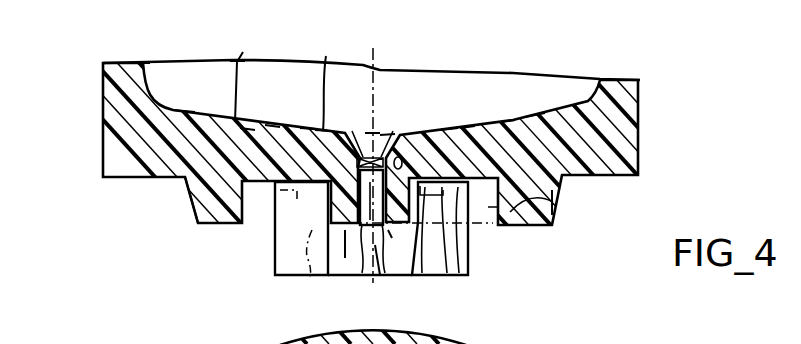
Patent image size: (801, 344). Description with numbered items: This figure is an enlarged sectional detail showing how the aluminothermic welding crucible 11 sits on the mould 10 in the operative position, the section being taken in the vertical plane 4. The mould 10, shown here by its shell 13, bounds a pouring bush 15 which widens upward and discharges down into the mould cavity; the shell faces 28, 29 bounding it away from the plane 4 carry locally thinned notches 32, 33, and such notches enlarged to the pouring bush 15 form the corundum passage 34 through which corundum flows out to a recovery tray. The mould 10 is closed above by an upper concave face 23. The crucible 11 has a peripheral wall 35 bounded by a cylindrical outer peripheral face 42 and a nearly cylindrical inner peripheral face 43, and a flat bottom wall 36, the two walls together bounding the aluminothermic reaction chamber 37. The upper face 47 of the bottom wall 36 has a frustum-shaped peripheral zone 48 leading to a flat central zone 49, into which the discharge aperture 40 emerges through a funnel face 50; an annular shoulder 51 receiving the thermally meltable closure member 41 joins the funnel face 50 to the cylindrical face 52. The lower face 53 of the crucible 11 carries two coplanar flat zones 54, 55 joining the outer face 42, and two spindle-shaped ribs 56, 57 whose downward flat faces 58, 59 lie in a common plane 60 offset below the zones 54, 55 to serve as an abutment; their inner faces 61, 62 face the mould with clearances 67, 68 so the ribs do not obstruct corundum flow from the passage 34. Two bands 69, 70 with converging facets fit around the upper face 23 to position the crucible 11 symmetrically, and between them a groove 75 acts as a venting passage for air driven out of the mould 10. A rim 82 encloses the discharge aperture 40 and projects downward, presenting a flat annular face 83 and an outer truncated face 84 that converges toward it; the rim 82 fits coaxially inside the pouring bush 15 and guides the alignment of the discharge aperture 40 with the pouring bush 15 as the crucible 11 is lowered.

The vertical plane 4 is at (386, 60).
The mould 10 is at (498, 277).
The aluminothermic welding crucible 11 is at (668, 97).
The shell 13 is at (287, 255).
The pouring bush 15 is at (348, 257).
The upper concave face 23 is at (306, 130).
The face 28 is at (468, 243).
The face 29 is at (275, 276).
The notch 32 is at (460, 266).
The notch 33 is at (275, 212).
The corundum passage 34 is at (459, 278).
The peripheral wall 35 is at (103, 95).
The bottom wall 36 is at (103, 155).
The aluminothermic reaction chamber 37 is at (436, 102).
The discharge aperture 40 is at (383, 132).
The thermally meltable closure member 41 is at (358, 157).
The cylindrical outer peripheral face 42 is at (638, 130).
The inner peripheral face 43 is at (143, 95).
The upper face 47 is at (180, 115).
The peripheral zone 48 is at (245, 50).
The central zone 49 is at (327, 56).
The face 50 is at (372, 133).
The annular shoulder 51 is at (424, 158).
The face 52 is at (380, 277).
The lower face 53 is at (150, 180).
The flat zone 54 is at (613, 176).
The flat zone 55 is at (118, 178).
The rib 56 is at (543, 226).
The rib 57 is at (190, 208).
The flat face 58 is at (532, 225).
The flat face 59 is at (203, 227).
The plane 60 is at (313, 275).
The face 61 is at (534, 123).
The face 62 is at (244, 122).
The clearance 67 is at (553, 200).
The clearance 68 is at (243, 227).
The band 69 is at (506, 132).
The band 70 is at (273, 130).
The groove 75 is at (452, 130).
The rim 82 is at (370, 238).
The flat annular face 83 is at (390, 240).
The face 84 is at (328, 212).